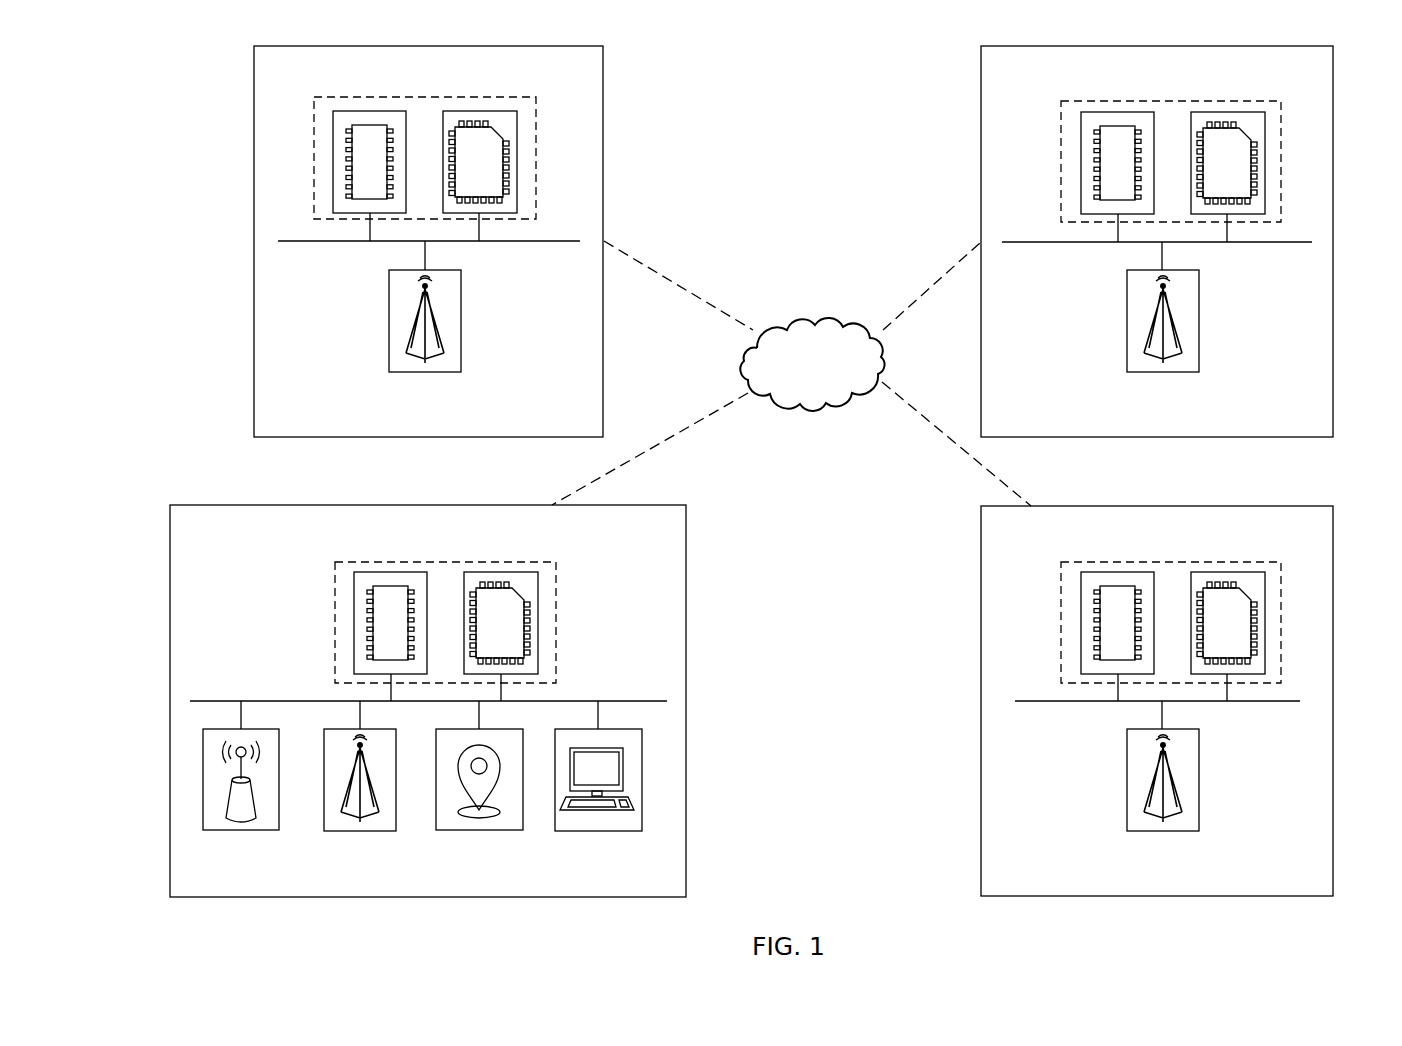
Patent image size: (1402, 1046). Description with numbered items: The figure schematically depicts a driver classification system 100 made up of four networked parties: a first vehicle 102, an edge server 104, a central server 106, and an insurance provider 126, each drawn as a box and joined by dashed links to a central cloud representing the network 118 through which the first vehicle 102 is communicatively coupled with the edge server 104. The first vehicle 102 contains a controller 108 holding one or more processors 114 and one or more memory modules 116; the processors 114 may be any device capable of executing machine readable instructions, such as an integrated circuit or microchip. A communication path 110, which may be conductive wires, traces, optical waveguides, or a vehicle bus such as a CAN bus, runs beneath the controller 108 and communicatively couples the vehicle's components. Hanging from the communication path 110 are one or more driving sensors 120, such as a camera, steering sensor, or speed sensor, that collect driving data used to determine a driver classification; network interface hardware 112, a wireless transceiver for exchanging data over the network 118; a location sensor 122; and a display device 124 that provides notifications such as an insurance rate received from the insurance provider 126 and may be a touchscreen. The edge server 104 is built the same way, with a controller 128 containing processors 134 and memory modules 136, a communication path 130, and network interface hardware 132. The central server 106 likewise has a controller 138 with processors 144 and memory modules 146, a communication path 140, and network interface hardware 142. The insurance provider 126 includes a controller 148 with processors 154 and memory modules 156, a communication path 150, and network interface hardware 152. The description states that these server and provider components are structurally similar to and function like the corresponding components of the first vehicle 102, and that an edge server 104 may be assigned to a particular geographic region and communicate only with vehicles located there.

The driver classification system 100 is at (184, 182).
The first vehicle 102 is at (687, 567).
The edge server 104 is at (1334, 557).
The central server 106 is at (604, 97).
The controller 108 is at (537, 562).
The communication path 110 is at (620, 700).
The network interface hardware 112 is at (360, 831).
The processors 114 is at (354, 597).
The memory modules 116 is at (538, 596).
The network 118 is at (815, 412).
The driving sensors 120 is at (241, 831).
The location sensor 122 is at (479, 831).
The display device 124 is at (598, 832).
The insurance provider 126 is at (1334, 97).
The controller 128 is at (1260, 562).
The communication path 130 is at (1045, 702).
The network interface hardware 132 is at (1198, 778).
The processors 134 is at (1081, 599).
The memory modules 136 is at (1264, 594).
The controller 138 is at (528, 97).
The communication path 140 is at (327, 242).
The network interface hardware 142 is at (461, 318).
The processors 144 is at (333, 135).
The memory modules 146 is at (517, 134).
The controller 148 is at (1260, 101).
The communication path 150 is at (1055, 243).
The network interface hardware 152 is at (1198, 318).
The processors 154 is at (1081, 139).
The memory modules 156 is at (1264, 134).